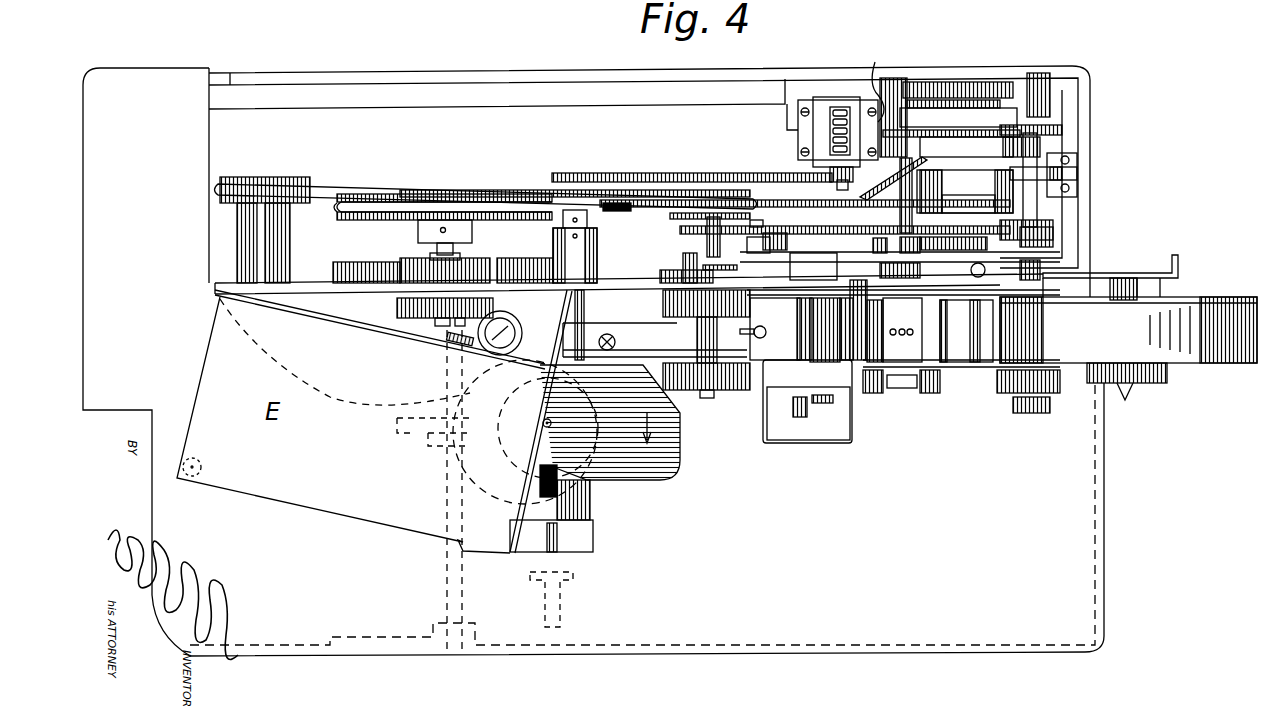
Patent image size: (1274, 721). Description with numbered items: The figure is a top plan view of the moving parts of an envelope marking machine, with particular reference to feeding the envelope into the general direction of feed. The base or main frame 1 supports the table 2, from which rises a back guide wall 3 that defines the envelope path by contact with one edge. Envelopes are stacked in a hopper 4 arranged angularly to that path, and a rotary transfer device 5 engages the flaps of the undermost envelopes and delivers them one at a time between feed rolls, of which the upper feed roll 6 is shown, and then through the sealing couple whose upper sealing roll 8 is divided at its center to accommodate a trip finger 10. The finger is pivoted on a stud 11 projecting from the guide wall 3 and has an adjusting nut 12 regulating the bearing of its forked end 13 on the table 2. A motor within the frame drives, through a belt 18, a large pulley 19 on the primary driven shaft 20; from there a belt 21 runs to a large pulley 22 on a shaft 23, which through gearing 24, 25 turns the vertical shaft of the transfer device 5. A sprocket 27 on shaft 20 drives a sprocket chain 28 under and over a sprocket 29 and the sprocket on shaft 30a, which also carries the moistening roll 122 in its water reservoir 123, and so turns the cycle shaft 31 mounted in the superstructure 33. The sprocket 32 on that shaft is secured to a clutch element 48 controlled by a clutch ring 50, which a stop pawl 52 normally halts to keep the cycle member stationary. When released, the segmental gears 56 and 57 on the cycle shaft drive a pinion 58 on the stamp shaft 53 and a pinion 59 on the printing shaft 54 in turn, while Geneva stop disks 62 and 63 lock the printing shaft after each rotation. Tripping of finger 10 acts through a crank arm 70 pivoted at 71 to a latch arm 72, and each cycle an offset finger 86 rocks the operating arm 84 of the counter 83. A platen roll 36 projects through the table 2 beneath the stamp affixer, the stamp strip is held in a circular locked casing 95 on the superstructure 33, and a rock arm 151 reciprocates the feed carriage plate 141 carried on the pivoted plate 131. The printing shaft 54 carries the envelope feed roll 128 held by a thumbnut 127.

The base or main frame 1 is at (230, 73).
The table 2 is at (642, 514).
The back guide wall 3 is at (637, 283).
The hopper 4 is at (377, 328).
The rotary feeding or transfer device 5 is at (660, 447).
The feed roll 6 is at (493, 308).
The upper sealing roll 8 is at (727, 397).
The trip finger 10 is at (640, 343).
The stud 11 is at (585, 308).
The adjusting nut 12 is at (615, 342).
The free forked end 13 is at (762, 342).
The belt 18 is at (505, 184).
The large pulley 19 is at (685, 158).
The primary driven shaft 20 is at (698, 223).
The belt 21 is at (337, 208).
The large pulley 22 is at (378, 224).
The shaft 23 is at (470, 243).
The gearing 24 is at (497, 432).
The gearing 25 is at (616, 405).
The sprocket 27 is at (680, 240).
The sprocket chain 28 is at (930, 234).
The sprocket 29 is at (785, 216).
The shaft 30a is at (826, 268).
The cycle shaft 31 is at (1000, 254).
The sprocket 32 is at (1060, 223).
The superstructure 33 is at (1104, 273).
The platen roll 36 is at (922, 393).
The clutch element 48 is at (968, 203).
The clutch ring 50 is at (965, 191).
The pawl 52 is at (1080, 170).
The stamp shaft 53 is at (900, 215).
The printing shaft 54 is at (1037, 200).
The segmental gear 56 is at (958, 105).
The segmental gear 57 is at (1015, 145).
The pinion 58 is at (872, 81).
The pinion 59 is at (1050, 115).
The Geneva stop disk 62 is at (951, 143).
The Geneva stop disk 63 is at (1062, 130).
The crank arm 70 is at (585, 210).
The pivot 71 is at (615, 203).
The latch arm 72 is at (650, 223).
The counter 83 is at (822, 127).
The operating arm 84 is at (834, 190).
The offset finger 86 is at (862, 196).
The circular locked casing 95 is at (1128, 330).
The moistening roll 122 is at (801, 330).
The water reservoir 123 is at (807, 401).
The thumbnut 127 is at (1017, 403).
The envelope feed roll 128 is at (1075, 390).
The plate 131 is at (966, 331).
The U-shaped plate 141 is at (894, 330).
The rock arm 151 is at (973, 373).